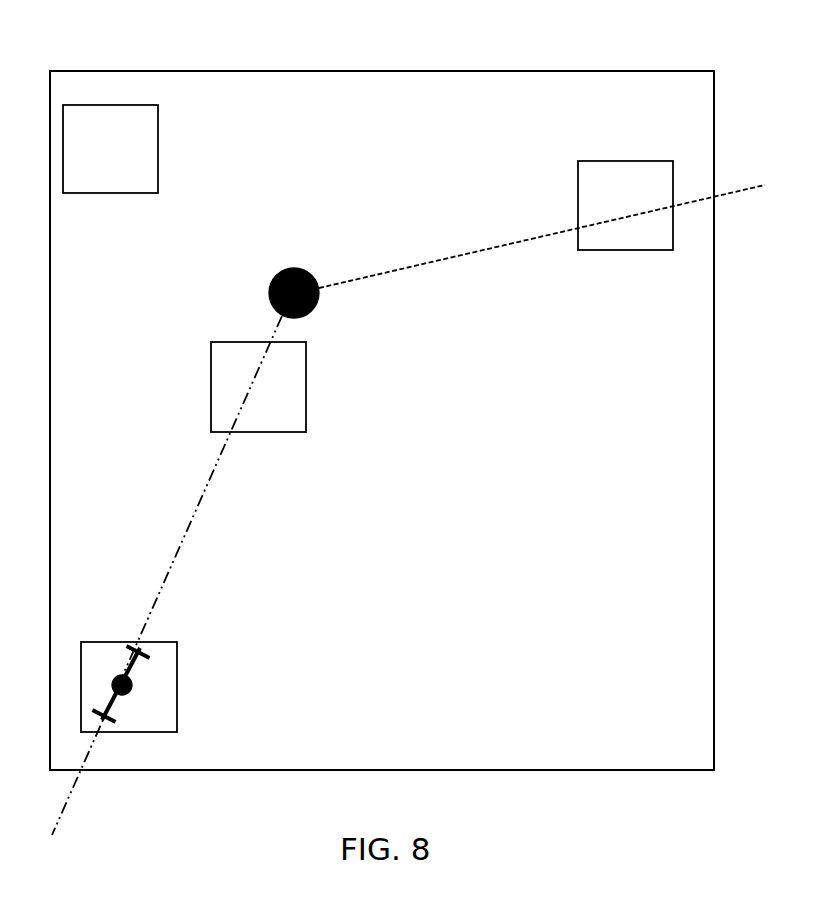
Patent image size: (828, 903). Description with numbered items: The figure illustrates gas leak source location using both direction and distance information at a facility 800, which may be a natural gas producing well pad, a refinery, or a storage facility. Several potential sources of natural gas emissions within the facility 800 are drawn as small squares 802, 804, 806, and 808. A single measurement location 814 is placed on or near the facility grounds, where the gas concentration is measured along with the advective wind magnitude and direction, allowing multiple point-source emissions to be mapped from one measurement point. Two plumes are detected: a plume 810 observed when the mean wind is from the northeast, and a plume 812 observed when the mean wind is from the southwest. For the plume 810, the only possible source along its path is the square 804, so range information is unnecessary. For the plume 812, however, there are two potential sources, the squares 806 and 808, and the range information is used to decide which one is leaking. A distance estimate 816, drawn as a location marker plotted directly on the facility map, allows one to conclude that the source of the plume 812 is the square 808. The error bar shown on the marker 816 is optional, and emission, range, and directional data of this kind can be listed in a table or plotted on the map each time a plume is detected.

The facility 800 is at (243, 71).
The potential emission source 802 is at (158, 155).
The potential emission source 804 is at (578, 200).
The potential emission source 806 is at (306, 388).
The potential emission source 808 is at (177, 692).
The plume 810 is at (453, 257).
The plume 812 is at (195, 513).
The measurement location 814 is at (294, 268).
The distance estimate 816 is at (112, 663).